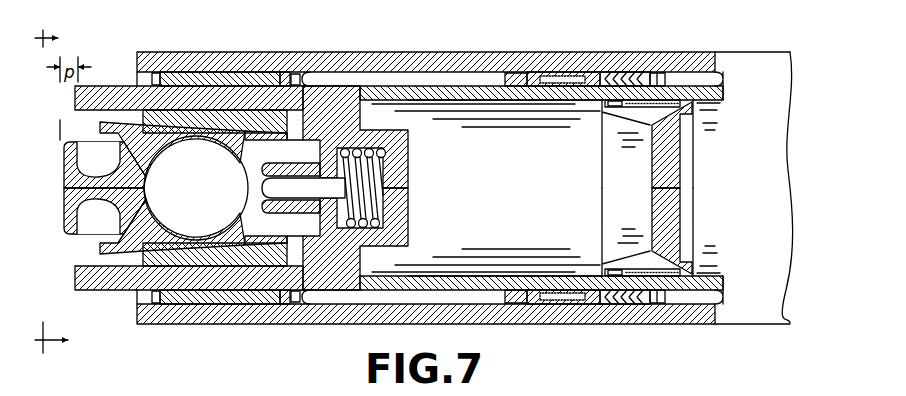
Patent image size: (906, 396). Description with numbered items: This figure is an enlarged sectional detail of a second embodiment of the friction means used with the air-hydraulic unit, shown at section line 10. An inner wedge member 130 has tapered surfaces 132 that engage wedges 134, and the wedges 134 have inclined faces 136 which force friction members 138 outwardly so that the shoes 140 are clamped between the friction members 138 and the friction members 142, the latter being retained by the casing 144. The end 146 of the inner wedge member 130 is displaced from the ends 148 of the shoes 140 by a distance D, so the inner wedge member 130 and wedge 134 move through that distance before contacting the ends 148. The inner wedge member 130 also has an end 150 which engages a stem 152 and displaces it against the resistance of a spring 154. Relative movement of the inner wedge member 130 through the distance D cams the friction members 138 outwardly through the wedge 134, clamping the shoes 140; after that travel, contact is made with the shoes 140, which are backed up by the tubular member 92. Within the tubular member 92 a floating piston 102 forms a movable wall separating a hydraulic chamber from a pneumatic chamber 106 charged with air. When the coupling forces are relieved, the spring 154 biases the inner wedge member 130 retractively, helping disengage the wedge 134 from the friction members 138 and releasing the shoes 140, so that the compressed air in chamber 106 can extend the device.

The section line 10 is at (56, 193).
The tubular member 92 is at (511, 100).
The floating piston 102 is at (663, 182).
The pneumatic chamber 106 is at (540, 219).
The inner wedge member 130 is at (70, 234).
The tapered surfaces 132 is at (131, 229).
The wedges 134 is at (165, 132).
The inclined faces 136 is at (264, 122).
The friction members 138 is at (311, 98).
The shoes 140 is at (333, 88).
The friction members 142 is at (205, 83).
The casing 144 is at (427, 65).
The end of inner wedge member 146 is at (57, 177).
The ends of the shoes 148 is at (97, 85).
The end of inner wedge 150 is at (213, 172).
The stem 152 is at (257, 189).
The spring 154 is at (372, 177).